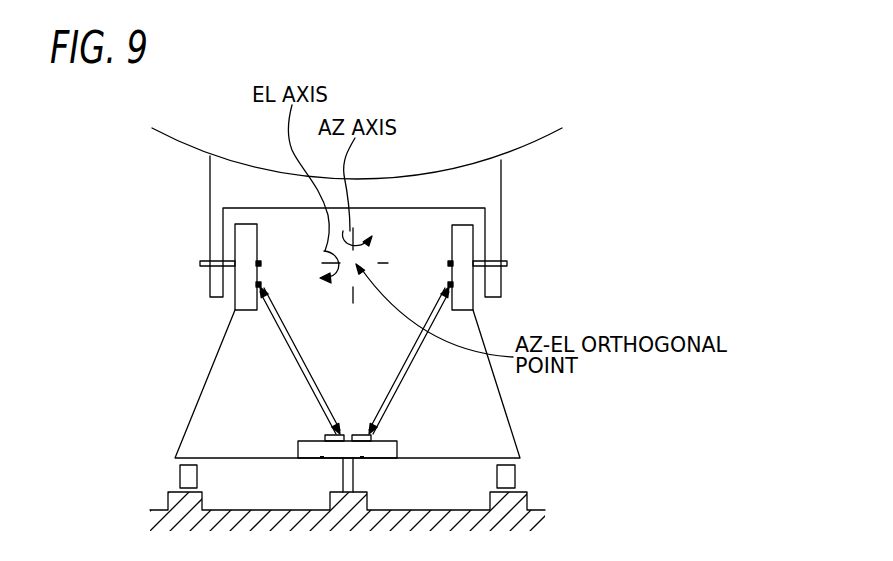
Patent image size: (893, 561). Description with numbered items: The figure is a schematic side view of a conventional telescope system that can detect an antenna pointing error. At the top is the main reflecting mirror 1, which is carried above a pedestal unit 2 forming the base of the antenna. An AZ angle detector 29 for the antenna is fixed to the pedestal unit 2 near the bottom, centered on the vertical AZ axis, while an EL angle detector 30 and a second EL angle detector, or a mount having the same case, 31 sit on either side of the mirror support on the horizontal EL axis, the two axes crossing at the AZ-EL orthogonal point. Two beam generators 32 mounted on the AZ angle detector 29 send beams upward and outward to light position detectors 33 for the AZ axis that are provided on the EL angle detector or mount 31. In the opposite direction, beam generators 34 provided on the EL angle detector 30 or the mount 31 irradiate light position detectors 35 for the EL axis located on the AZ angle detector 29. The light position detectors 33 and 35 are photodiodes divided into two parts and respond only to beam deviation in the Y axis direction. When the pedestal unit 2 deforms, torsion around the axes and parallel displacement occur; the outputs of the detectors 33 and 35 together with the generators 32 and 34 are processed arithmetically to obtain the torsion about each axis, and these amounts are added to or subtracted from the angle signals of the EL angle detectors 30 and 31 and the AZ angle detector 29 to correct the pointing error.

The main reflecting mirror 1 is at (403, 178).
The pedestal unit 2 is at (510, 420).
The AZ angle detector 29 is at (298, 448).
The EL angle detector 30 is at (475, 305).
The EL angle detector or mount 31 is at (235, 305).
The beam generators 32 is at (325, 434).
The light position detectors for an AZ axis 33 is at (261, 283).
The beam generators 34 is at (259, 263).
The light position detectors for an EL axis 35 is at (322, 459).